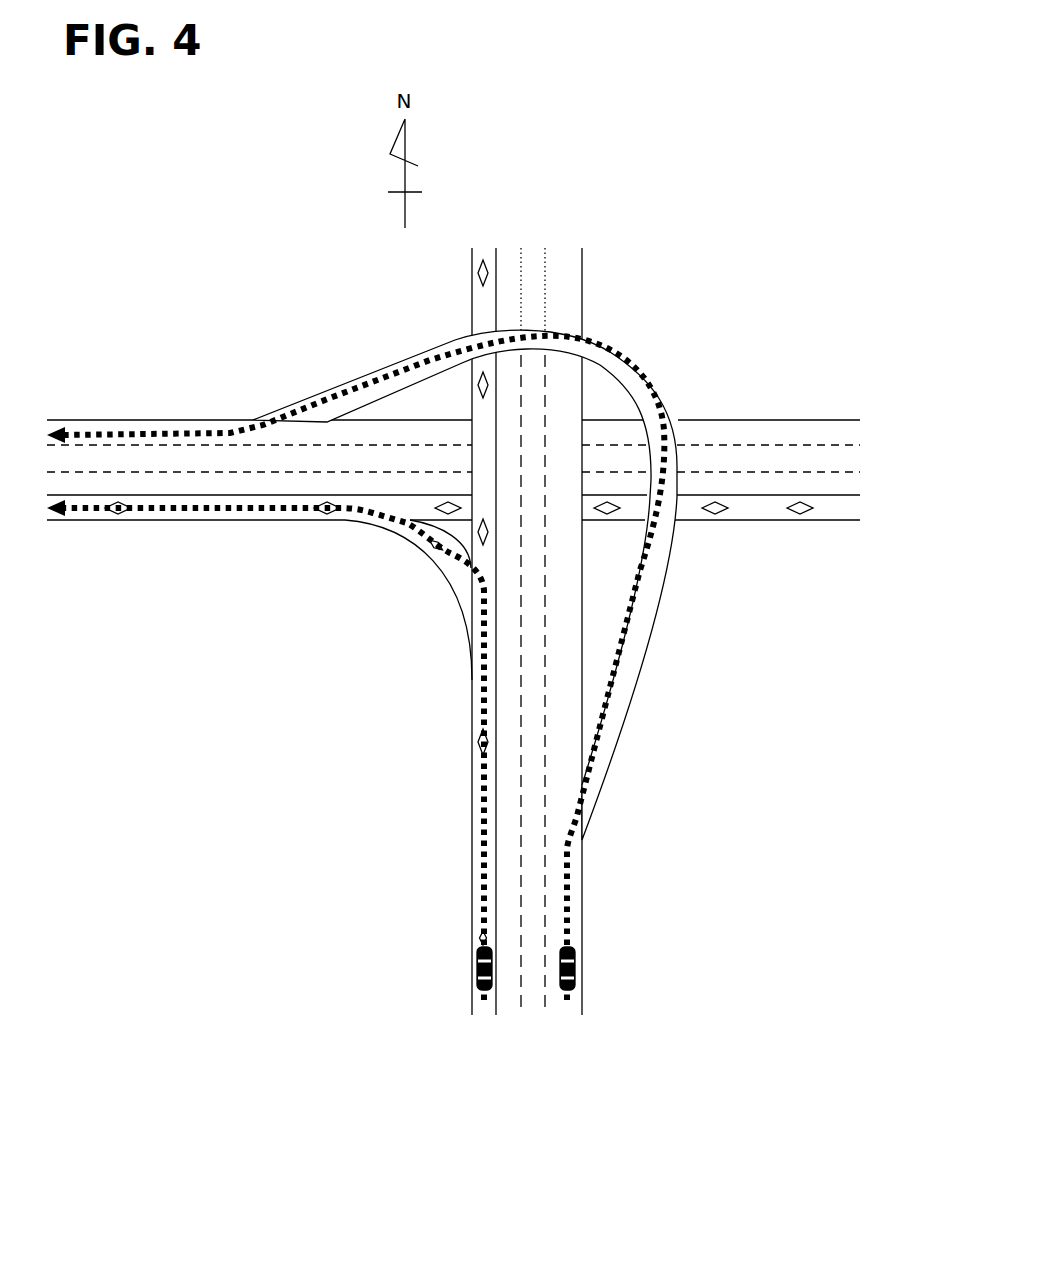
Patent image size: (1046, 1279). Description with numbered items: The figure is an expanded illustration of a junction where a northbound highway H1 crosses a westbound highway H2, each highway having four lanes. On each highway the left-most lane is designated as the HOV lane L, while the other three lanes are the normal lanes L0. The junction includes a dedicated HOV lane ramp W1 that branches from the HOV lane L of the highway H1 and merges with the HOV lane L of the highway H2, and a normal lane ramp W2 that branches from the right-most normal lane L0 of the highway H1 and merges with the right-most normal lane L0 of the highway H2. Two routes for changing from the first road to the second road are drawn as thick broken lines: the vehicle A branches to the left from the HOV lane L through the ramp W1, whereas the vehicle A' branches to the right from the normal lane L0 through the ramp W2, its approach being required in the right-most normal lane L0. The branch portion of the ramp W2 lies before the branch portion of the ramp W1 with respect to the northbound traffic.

The highway H1 is at (597, 877).
The highway H2 is at (712, 413).
The normal lane L0 is at (192, 457).
The HOV lane L is at (208, 515).
The HOV lane ramp W1 is at (430, 555).
The normal lane ramp W2 is at (645, 643).
The vehicle A is at (445, 968).
The vehicle A' is at (617, 968).